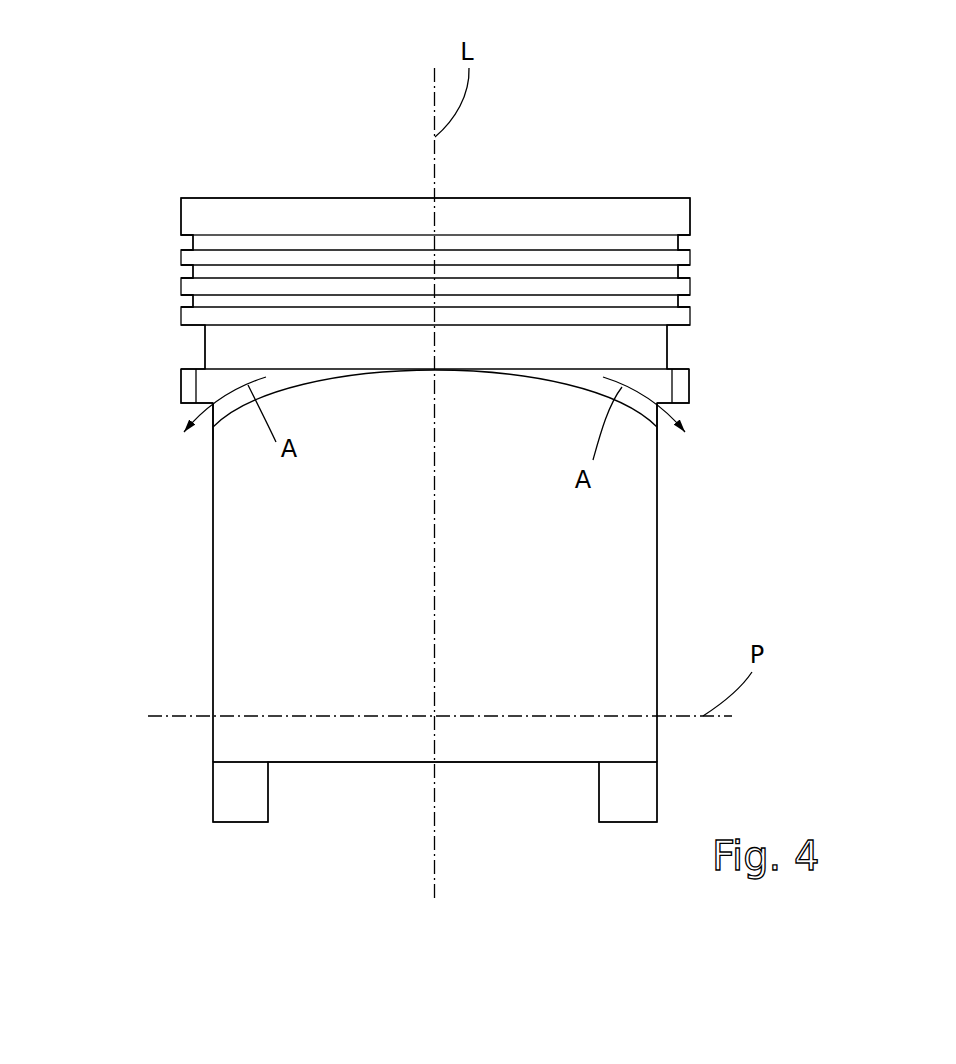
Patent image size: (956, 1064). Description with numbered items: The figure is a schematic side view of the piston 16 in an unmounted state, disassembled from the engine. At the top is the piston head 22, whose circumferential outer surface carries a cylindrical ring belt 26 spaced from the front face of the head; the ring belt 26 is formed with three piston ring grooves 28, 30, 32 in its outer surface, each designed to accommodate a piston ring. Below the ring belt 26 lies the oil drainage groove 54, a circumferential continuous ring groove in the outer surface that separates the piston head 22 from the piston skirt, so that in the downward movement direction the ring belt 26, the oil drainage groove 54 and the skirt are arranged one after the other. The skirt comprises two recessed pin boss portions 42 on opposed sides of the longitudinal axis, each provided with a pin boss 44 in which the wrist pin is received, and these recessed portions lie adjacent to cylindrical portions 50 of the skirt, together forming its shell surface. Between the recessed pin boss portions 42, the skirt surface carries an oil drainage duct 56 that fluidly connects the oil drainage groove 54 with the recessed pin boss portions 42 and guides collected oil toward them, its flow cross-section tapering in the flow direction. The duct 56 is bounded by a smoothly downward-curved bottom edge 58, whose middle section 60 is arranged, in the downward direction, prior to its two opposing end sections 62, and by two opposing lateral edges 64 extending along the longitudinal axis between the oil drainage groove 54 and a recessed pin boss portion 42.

The piston 16 is at (586, 92).
The piston head 22 is at (617, 195).
The ring belt 26 is at (167, 251).
The piston ring groove 28 is at (685, 245).
The piston ring groove 30 is at (685, 272).
The piston ring groove 32 is at (685, 300).
The recessed pin boss portion 42 is at (195, 527).
The pin boss 44 is at (245, 805).
The cylindrical portion 50 is at (253, 605).
The oil drainage groove 54 is at (177, 342).
The oil drainage duct 56 is at (664, 382).
The bottom edge 58 is at (553, 385).
The middle section 60 is at (437, 369).
The end section 62 is at (217, 422).
The lateral edge 64 is at (187, 389).